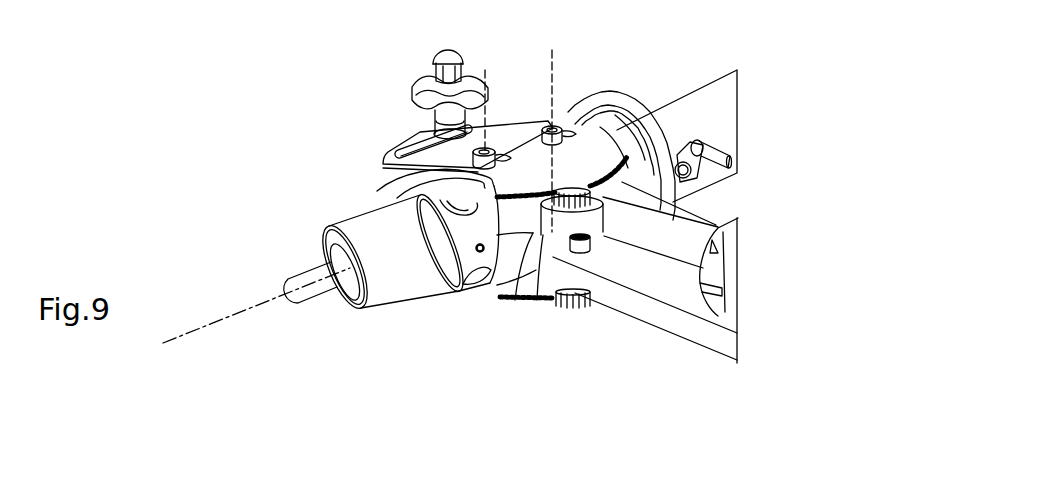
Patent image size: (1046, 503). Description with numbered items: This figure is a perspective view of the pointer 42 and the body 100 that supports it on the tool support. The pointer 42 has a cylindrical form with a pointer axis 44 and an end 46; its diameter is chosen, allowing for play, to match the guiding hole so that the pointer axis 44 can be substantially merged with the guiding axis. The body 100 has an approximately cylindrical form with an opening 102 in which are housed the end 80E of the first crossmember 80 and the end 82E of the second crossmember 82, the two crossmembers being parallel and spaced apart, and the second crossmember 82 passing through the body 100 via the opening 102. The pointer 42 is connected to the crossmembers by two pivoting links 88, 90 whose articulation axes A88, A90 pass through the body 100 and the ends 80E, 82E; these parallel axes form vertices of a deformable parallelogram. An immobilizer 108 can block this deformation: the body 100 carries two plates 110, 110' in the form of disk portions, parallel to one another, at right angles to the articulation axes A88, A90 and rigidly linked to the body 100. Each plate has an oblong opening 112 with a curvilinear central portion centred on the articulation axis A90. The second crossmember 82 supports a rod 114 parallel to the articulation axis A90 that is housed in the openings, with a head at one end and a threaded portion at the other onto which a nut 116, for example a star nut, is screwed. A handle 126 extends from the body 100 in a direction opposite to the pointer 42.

The pointer 42 is at (292, 250).
The pointer axis 44 is at (198, 322).
The end 46 is at (277, 304).
The first crossmember 80 is at (707, 225).
The end of the first crossmember 80E is at (617, 162).
The second crossmember 82 is at (640, 300).
The end of the second crossmember 82E is at (533, 233).
The pivoting link 88 is at (565, 114).
The articulation axis A88 is at (552, 52).
The pivoting link 90 is at (497, 141).
The articulation axis A90 is at (486, 78).
The body 100 is at (602, 126).
The opening 102 is at (694, 146).
The immobilizer 108 is at (448, 32).
The plate 110 is at (430, 149).
The plate 110' is at (439, 311).
The oblong opening 112 is at (410, 144).
The rod 114 is at (383, 188).
The nut 116 is at (427, 74).
The handle 126 is at (733, 120).